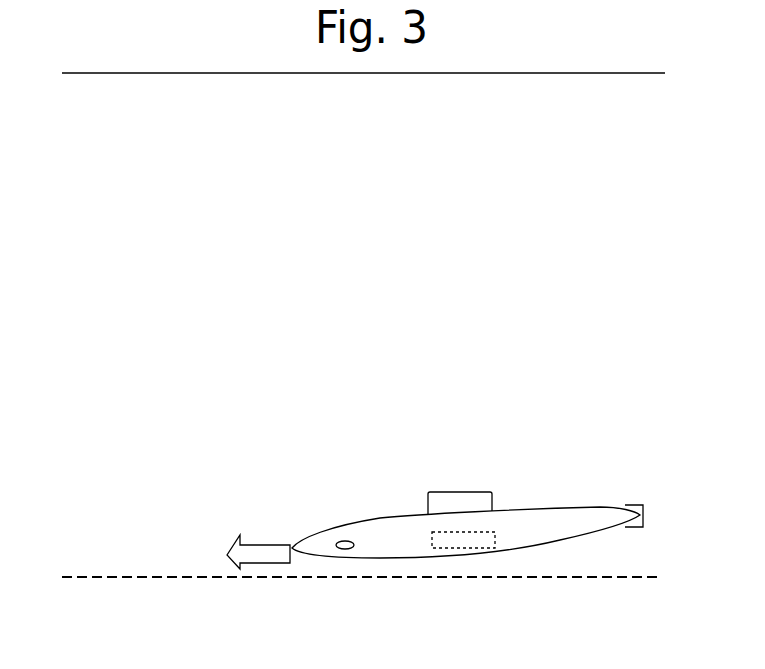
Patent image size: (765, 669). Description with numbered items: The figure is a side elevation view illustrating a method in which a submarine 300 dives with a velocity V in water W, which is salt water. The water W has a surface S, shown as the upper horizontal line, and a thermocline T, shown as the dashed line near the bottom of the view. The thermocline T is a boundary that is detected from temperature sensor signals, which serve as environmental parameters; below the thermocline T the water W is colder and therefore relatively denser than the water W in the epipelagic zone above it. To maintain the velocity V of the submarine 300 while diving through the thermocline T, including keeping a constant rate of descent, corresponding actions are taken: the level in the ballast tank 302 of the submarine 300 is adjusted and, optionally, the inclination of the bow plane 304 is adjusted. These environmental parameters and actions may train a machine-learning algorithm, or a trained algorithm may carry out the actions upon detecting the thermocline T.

The submarine 300 is at (382, 517).
The ballast tank 302 is at (465, 547).
The bow plane 304 is at (345, 552).
The surface S is at (530, 75).
The thermocline T is at (583, 577).
The water W is at (136, 297).
The velocity V is at (253, 545).